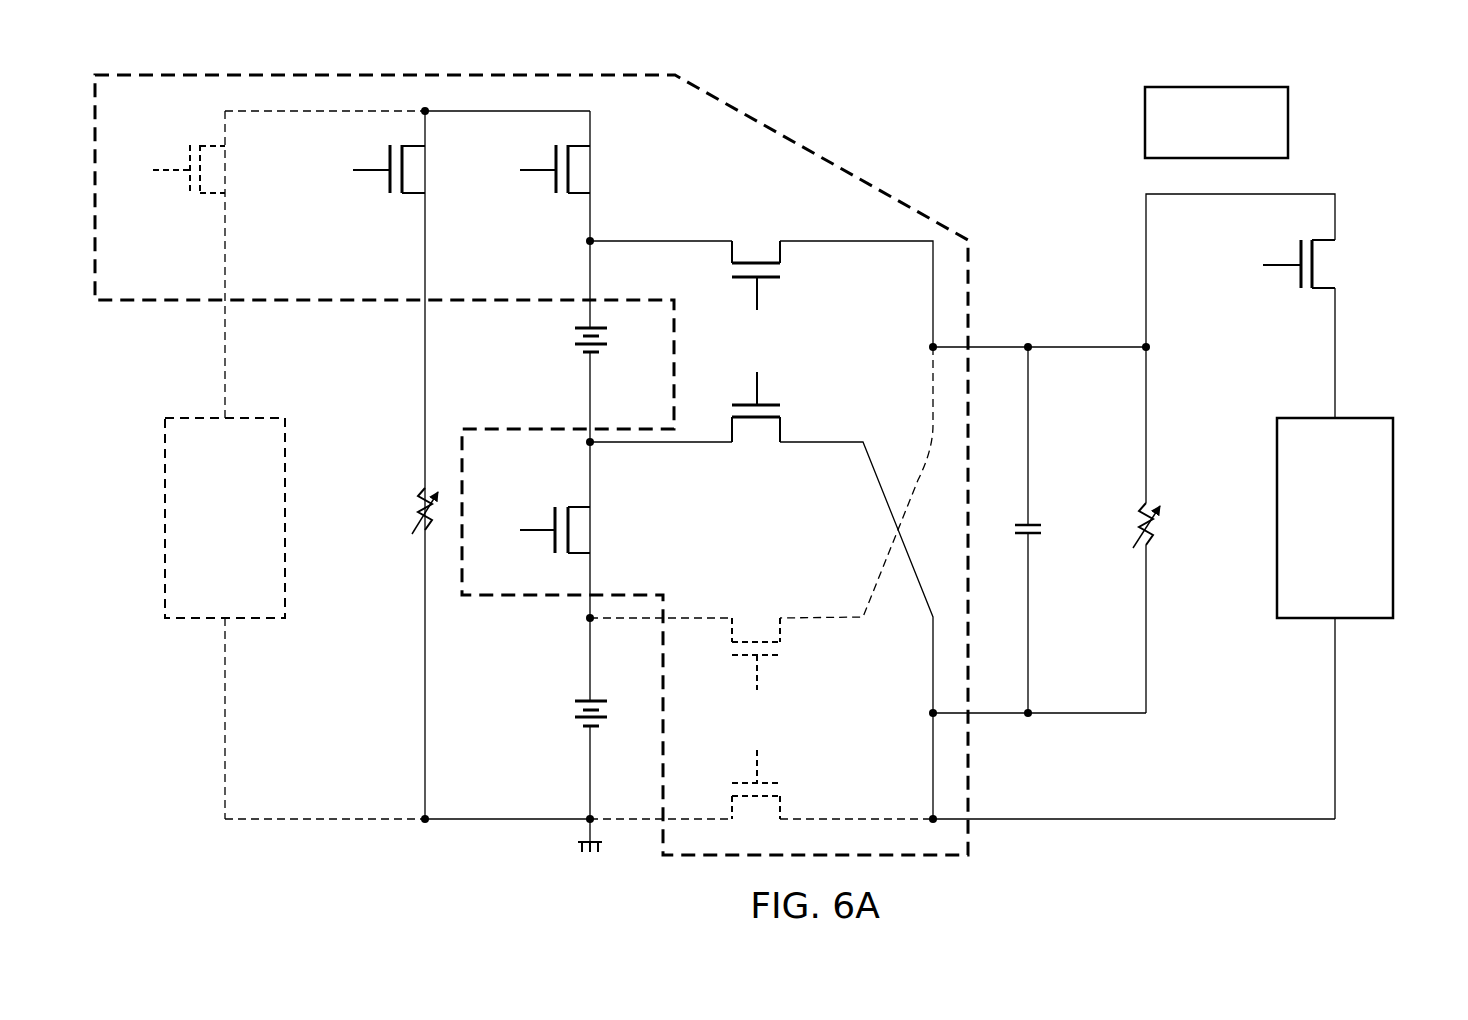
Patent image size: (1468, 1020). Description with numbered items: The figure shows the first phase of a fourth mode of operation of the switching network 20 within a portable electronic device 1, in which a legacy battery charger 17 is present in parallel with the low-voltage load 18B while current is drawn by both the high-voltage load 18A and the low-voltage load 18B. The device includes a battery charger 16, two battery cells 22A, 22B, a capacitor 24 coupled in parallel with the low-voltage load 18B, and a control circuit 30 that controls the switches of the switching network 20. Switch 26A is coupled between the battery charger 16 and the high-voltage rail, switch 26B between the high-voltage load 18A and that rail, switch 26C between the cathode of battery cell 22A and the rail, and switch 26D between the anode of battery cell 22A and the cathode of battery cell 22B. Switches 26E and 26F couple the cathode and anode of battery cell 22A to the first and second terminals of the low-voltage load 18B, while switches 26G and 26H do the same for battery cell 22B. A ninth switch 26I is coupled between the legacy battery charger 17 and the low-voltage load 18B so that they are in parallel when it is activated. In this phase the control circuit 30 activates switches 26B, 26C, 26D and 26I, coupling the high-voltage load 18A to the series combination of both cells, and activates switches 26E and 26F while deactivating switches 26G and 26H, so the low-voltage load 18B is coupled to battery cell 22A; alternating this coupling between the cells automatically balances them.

The portable electronic device 1 is at (1404, 208).
The battery charger 16 is at (211, 574).
The legacy battery charger 17 is at (1321, 579).
The high-voltage load 18A is at (422, 510).
The low-voltage load 18B is at (1158, 532).
The switching network 20 is at (975, 762).
The battery cell 22A is at (575, 348).
The battery cell 22B is at (571, 712).
The capacitor 24 is at (1041, 530).
The switch 26A is at (190, 170).
The switch 26B is at (390, 170).
The switch 26C is at (556, 170).
The switch 26D is at (555, 542).
The switch 26E is at (745, 279).
The switch 26F is at (772, 403).
The switch 26G is at (740, 656).
The switch 26H is at (774, 782).
The ninth switch 26I is at (1301, 262).
The control circuit 30 is at (1218, 87).